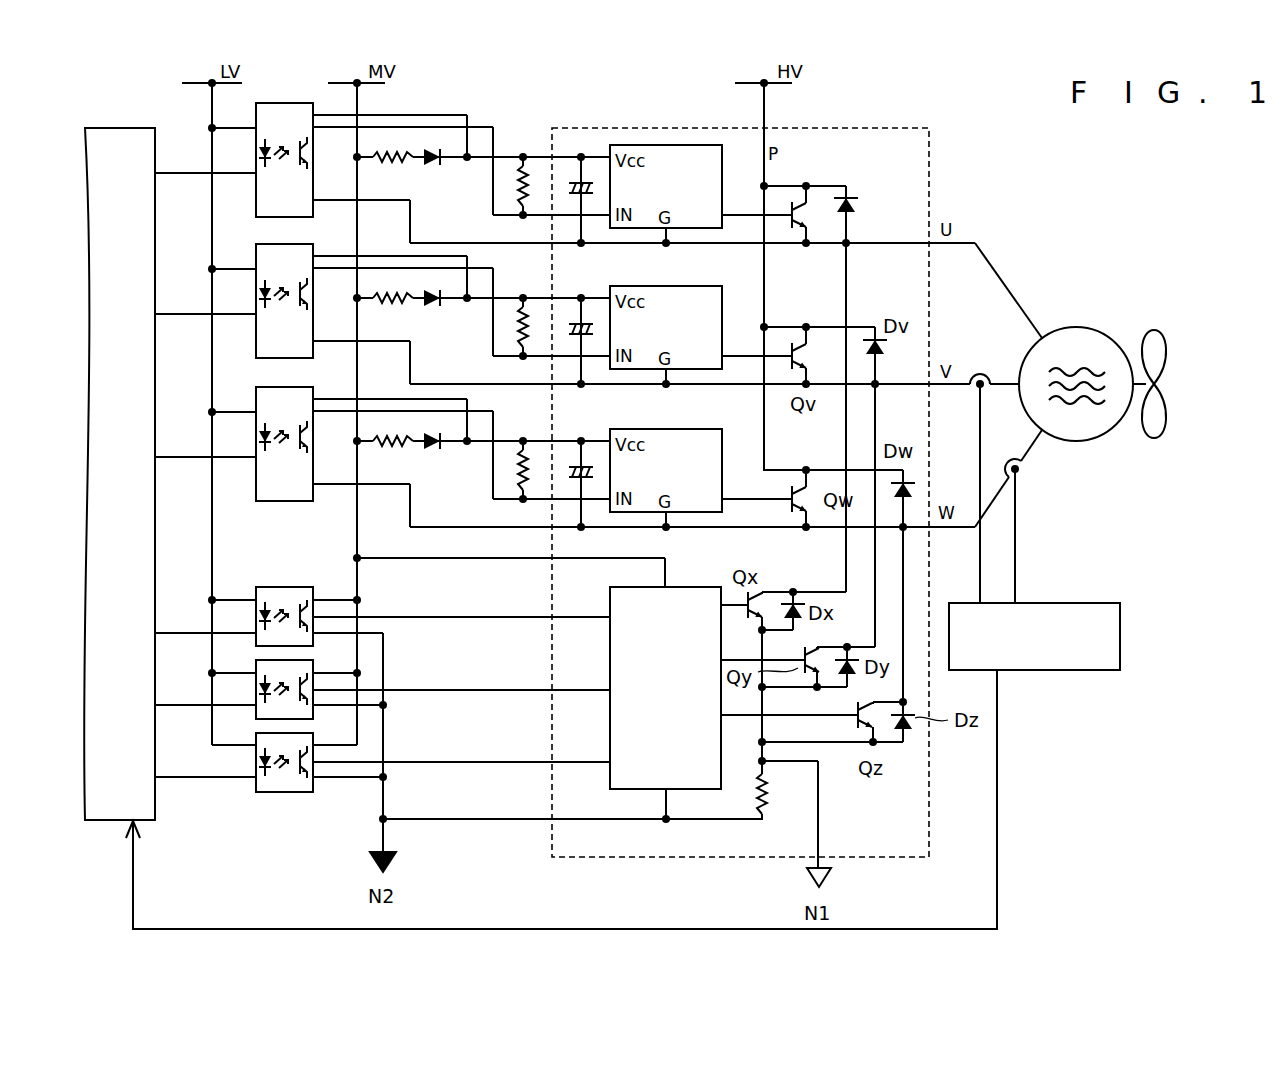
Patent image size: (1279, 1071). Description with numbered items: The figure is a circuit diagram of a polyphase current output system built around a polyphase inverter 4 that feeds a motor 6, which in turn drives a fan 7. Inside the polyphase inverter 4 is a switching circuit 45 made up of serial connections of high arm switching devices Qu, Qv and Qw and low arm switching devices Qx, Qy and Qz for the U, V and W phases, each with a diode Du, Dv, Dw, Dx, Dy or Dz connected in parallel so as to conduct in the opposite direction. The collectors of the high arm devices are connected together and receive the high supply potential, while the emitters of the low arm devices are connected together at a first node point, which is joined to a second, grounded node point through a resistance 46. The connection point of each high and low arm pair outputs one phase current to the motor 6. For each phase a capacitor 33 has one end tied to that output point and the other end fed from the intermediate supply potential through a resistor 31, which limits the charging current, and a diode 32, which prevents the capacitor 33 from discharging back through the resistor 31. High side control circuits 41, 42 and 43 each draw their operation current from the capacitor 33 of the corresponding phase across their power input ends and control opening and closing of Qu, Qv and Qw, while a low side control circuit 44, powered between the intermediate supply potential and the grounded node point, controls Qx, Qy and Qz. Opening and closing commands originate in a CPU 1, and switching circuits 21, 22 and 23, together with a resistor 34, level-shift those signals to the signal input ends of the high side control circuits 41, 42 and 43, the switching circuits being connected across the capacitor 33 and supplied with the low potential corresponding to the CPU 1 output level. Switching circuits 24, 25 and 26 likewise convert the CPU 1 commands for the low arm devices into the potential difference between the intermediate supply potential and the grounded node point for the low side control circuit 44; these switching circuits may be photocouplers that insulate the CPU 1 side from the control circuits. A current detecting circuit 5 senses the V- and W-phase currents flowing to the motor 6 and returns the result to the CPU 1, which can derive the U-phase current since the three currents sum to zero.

The CPU 1 is at (155, 800).
The polyphase inverter 4 is at (930, 797).
The current detecting circuit 5 is at (1120, 633).
The motor 6 is at (1076, 327).
The fan 7 is at (1155, 440).
The switching circuit 21 is at (286, 217).
The switching circuit 22 is at (286, 358).
The switching circuit 23 is at (286, 501).
The switching circuit 24 is at (284, 587).
The switching circuit 25 is at (256, 690).
The switching circuit 26 is at (283, 792).
The resistor 31 is at (391, 166).
The diode 32 is at (447, 168).
The capacitor 33 is at (572, 152).
The resistor 34 is at (515, 152).
The high side control circuit 41 is at (723, 197).
The high side control circuit 42 is at (723, 338).
The high side control circuit 43 is at (723, 455).
The low side control circuit 44 is at (640, 587).
The switching circuit 45 is at (852, 178).
The resistance 46 is at (776, 784).